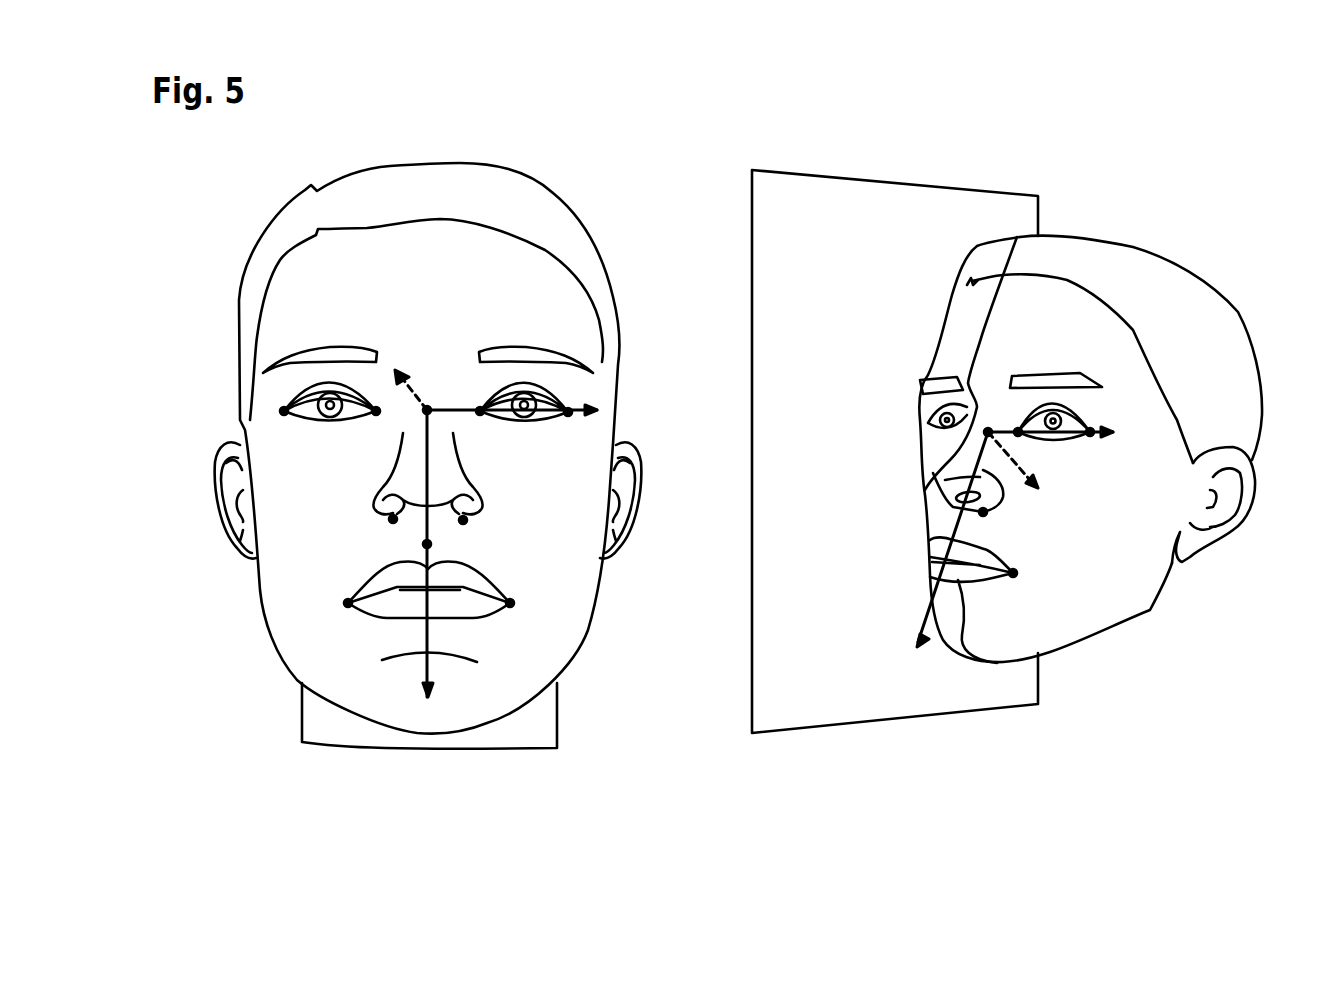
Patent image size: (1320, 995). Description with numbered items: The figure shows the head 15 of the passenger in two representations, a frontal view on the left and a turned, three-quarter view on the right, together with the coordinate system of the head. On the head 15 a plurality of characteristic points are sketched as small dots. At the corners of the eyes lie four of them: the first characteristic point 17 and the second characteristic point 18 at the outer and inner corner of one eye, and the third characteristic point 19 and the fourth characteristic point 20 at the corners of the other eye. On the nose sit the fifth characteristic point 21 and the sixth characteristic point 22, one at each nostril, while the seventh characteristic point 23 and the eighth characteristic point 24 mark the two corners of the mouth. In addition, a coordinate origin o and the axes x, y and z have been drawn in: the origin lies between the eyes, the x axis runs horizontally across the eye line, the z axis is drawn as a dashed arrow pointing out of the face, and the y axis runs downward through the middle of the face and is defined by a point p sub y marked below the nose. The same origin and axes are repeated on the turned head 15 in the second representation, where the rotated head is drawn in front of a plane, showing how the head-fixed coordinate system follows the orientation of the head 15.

The head 15 is at (558, 226).
The first characteristic point 17 is at (284, 411).
The second characteristic point 18 is at (377, 408).
The third characteristic point 19 is at (479, 408).
The fourth characteristic point 20 is at (568, 412).
The fifth characteristic point 21 is at (391, 519).
The sixth characteristic point 22 is at (464, 520).
The seventh characteristic point 23 is at (347, 603).
The eighth characteristic point 24 is at (510, 603).